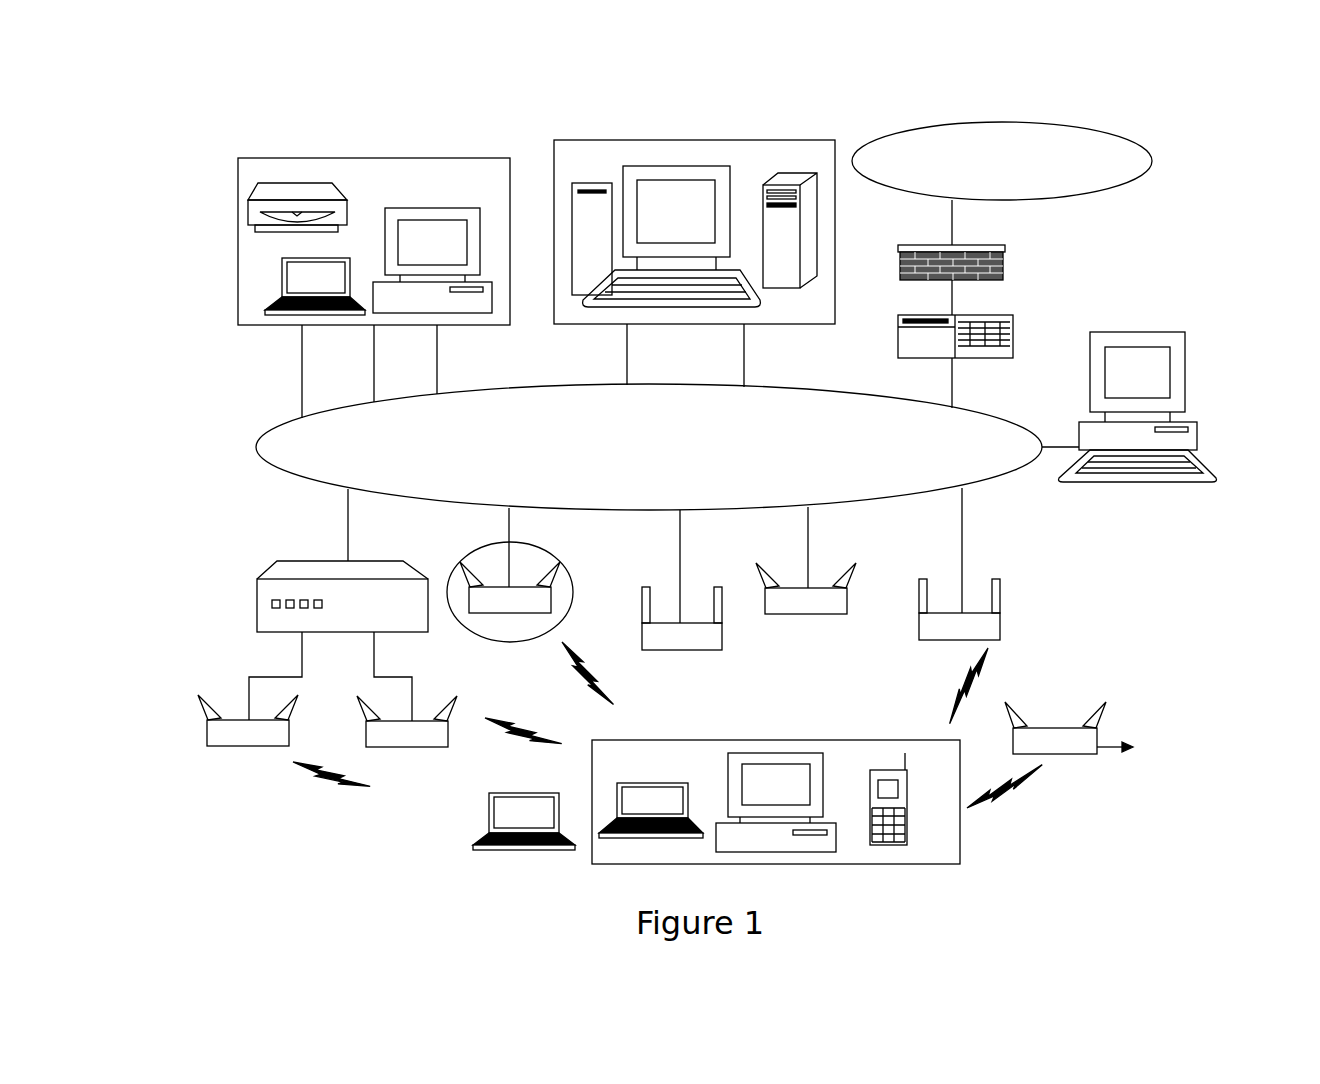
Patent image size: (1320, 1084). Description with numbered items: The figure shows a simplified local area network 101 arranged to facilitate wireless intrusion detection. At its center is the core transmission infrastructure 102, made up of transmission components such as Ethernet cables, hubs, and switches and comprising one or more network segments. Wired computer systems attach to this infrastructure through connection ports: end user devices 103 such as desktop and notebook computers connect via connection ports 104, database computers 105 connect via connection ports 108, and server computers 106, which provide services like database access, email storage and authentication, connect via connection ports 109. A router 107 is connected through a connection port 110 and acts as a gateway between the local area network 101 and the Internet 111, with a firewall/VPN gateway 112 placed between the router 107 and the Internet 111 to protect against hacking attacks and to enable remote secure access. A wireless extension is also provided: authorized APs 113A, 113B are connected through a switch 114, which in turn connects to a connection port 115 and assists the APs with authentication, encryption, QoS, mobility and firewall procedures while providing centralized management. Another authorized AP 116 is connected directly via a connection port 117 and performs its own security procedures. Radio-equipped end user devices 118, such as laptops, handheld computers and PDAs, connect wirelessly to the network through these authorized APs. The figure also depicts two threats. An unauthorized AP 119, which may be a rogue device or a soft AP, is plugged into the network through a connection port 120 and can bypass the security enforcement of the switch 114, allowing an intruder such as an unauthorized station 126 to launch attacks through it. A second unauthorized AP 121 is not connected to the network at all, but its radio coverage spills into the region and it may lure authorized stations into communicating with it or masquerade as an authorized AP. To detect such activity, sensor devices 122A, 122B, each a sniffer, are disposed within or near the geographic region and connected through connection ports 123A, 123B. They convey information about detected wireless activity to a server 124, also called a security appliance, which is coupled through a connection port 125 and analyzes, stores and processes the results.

The local area network 101 is at (296, 123).
The core transmission infrastructure 102 is at (270, 429).
The end user devices 103 is at (446, 158).
The connection ports 104 is at (465, 359).
The database computers 105 is at (654, 166).
The server computers 106 is at (781, 173).
The router 107 is at (898, 350).
The connection ports 108 is at (627, 350).
The connection ports 109 is at (744, 350).
The connection port 110 is at (957, 382).
The Internet 111 is at (1133, 140).
The firewall/VPN gateway 112 is at (1007, 262).
The authorized AP 113A is at (267, 746).
The authorized AP 113B is at (432, 747).
The switch 114 is at (276, 561).
The connection port 115 is at (348, 519).
The authorized AP 116 is at (835, 614).
The connection port 117 is at (808, 526).
The end user devices 118 is at (897, 740).
The unauthorized AP 119 is at (483, 613).
The connection port 120 is at (512, 535).
The unauthorized AP 121 is at (1059, 754).
The sensor device 122A is at (698, 650).
The sensor device 122B is at (1000, 623).
The connection port 123A is at (680, 532).
The connection port 123B is at (962, 535).
The server 124 is at (1172, 332).
The connection port 125 is at (1059, 447).
The unauthorized station 126 is at (473, 837).